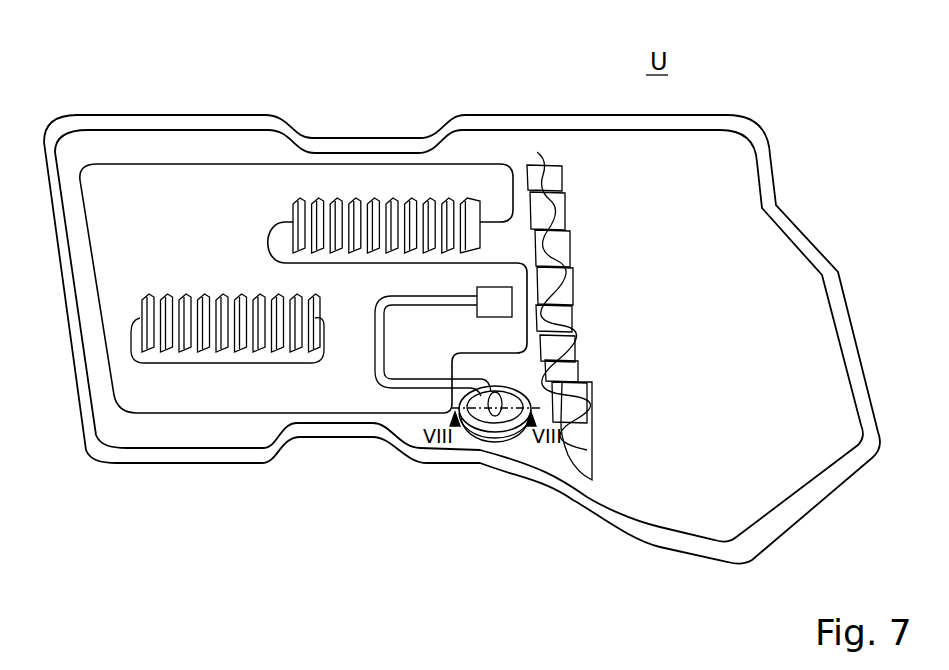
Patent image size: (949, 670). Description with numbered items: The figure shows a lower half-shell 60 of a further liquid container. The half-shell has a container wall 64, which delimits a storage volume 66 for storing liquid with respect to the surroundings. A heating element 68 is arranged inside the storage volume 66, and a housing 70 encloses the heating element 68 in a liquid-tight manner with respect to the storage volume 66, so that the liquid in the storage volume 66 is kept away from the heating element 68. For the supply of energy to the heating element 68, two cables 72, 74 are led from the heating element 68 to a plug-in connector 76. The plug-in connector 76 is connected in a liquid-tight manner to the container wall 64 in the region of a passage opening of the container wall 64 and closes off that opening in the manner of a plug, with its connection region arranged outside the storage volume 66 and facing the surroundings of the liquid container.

The lower half-shell 60 is at (96, 86).
The container wall 64 is at (208, 118).
The storage volume 66 is at (661, 280).
The heating element 68 is at (272, 192).
The housing 70 is at (227, 328).
The cable 72 is at (408, 389).
The cable 74 is at (447, 383).
The plug-in connector 76 is at (497, 423).